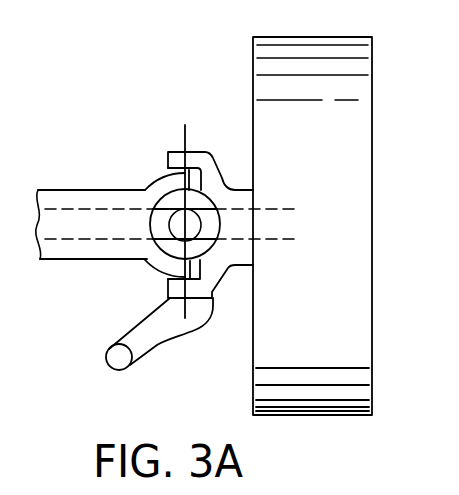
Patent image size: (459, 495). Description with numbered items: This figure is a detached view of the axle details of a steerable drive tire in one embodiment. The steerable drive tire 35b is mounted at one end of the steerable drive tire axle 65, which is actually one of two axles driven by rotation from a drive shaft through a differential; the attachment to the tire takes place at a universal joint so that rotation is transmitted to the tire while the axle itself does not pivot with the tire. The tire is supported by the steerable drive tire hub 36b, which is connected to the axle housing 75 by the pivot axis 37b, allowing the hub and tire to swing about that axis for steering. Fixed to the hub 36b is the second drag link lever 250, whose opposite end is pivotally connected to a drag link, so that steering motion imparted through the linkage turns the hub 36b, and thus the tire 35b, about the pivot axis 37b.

The steerable drive tire 35b is at (333, 162).
The steerable drive tire hub 36b is at (222, 170).
The pivot axis 37b is at (185, 140).
The steerable drive tire axle 65 is at (163, 222).
The axle housing 75 is at (59, 192).
The second drag link lever 250 is at (153, 347).